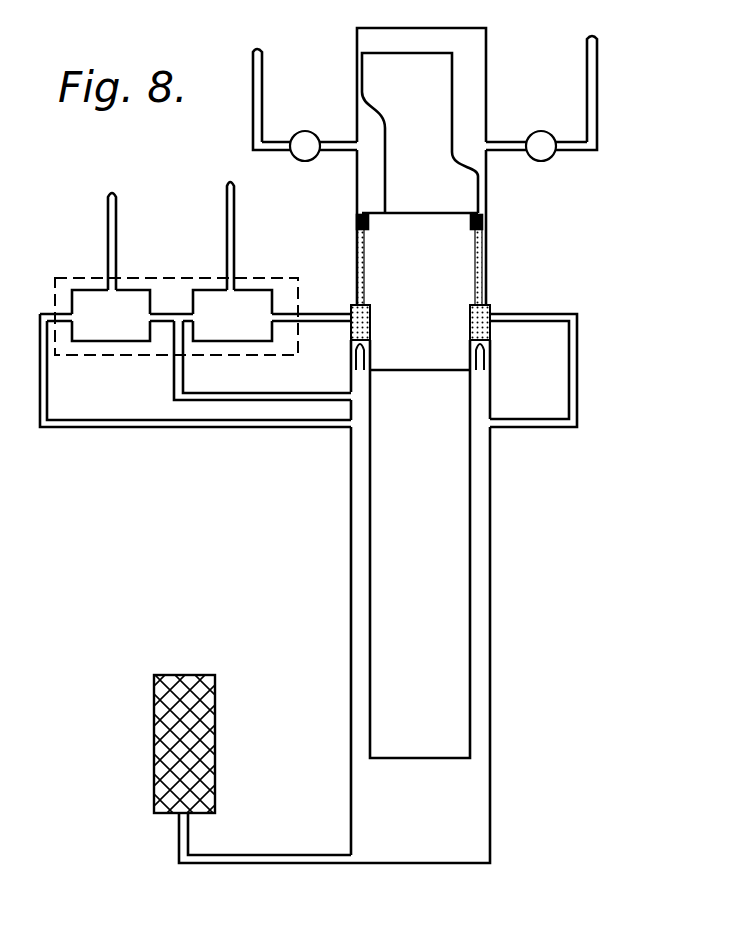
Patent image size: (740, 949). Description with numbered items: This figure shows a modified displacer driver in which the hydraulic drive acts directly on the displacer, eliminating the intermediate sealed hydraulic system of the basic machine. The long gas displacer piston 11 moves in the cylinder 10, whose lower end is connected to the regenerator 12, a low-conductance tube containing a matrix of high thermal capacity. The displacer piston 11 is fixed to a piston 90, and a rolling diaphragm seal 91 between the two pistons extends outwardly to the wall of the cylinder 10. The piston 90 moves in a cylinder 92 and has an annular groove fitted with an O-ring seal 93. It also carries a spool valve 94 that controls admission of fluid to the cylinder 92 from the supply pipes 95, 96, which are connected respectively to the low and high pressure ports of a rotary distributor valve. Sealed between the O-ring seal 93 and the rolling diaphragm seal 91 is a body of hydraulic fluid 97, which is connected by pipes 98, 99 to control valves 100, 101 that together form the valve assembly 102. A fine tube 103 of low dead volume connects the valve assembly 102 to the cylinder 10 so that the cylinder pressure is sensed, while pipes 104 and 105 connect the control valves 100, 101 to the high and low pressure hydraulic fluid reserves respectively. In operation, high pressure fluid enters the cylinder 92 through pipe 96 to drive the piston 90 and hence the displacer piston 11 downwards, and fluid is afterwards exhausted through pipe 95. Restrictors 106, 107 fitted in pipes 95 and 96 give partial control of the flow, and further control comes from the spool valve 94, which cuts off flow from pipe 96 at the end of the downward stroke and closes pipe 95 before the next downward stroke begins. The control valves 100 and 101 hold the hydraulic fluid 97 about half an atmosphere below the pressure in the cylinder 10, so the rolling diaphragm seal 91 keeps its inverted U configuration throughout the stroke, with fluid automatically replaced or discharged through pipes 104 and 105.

The cylinder 10 is at (491, 521).
The gas displacer piston 11 is at (462, 577).
The regenerator 12 is at (205, 732).
The piston 90 is at (440, 262).
The rolling diaphragm seal 91 is at (488, 355).
The cylinder 92 is at (470, 61).
The O-ring seal 93 is at (482, 222).
The spool valve 94 is at (430, 100).
The supply pipe 95 is at (594, 133).
The supply pipe 96 is at (257, 98).
The hydraulic fluid 97 is at (483, 240).
The pipe 98 is at (176, 428).
The pipe 99 is at (321, 314).
The control valve 100 is at (92, 303).
The control valve 101 is at (246, 300).
The valve assembly 102 is at (142, 277).
The fine tube 103 is at (250, 400).
The pipe 104 is at (113, 212).
The pipe 105 is at (235, 211).
The restrictor 106 is at (547, 122).
The restrictor 107 is at (308, 131).